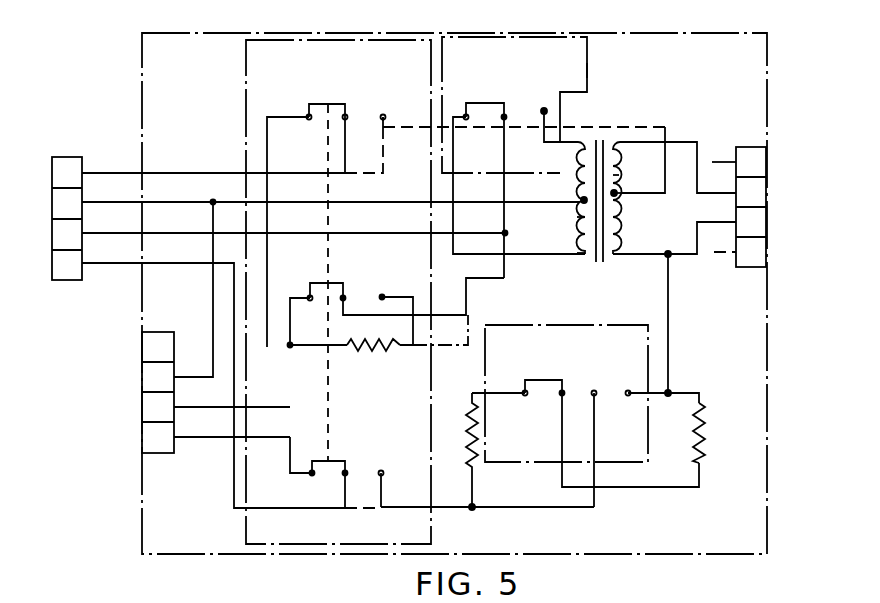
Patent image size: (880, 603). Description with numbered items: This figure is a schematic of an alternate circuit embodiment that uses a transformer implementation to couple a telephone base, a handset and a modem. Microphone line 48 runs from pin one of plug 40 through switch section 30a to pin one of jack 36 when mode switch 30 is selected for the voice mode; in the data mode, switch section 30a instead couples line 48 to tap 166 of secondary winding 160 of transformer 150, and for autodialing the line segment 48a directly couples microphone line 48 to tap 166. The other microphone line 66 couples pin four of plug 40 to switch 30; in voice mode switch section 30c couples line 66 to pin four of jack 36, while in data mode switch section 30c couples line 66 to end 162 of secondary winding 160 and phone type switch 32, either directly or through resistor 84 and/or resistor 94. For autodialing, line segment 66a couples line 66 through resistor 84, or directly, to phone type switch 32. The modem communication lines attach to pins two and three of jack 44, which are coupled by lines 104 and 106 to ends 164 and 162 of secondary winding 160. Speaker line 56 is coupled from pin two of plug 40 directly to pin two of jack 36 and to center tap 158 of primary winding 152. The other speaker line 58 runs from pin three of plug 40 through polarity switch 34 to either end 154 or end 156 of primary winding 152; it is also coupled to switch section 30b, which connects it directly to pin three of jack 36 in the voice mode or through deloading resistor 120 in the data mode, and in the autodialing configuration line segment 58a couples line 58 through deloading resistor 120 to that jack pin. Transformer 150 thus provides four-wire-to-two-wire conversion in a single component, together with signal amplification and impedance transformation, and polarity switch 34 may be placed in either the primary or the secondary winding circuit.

The mode switch 30 is at (246, 68).
The switch section 30a is at (299, 107).
The switch section 30b is at (298, 292).
The switch section 30c is at (343, 452).
The phone type switch 32 is at (552, 465).
The polarity switch 34 is at (587, 52).
The jack 36 is at (162, 453).
The plug 40 is at (67, 157).
The jack 44 is at (735, 157).
The microphone line 48 is at (158, 173).
The line segment 48a is at (364, 171).
The speaker line 56 is at (158, 202).
The speaker line 58 is at (158, 233).
The line segment 58a is at (438, 345).
The microphone line 66 is at (158, 263).
The line segment 66a is at (370, 509).
The resistor 84 is at (470, 413).
The resistor 94 is at (705, 437).
The line 104 is at (681, 139).
The line 106 is at (682, 257).
The deloading resistor 120 is at (370, 350).
The transformer 150 is at (598, 258).
The primary winding 152 is at (576, 222).
The end 154 is at (574, 257).
The end 156 is at (580, 140).
The center tap 158 is at (579, 201).
The secondary winding 160 is at (631, 176).
The end 162 is at (621, 256).
The end 164 is at (621, 140).
The tap 166 is at (616, 197).